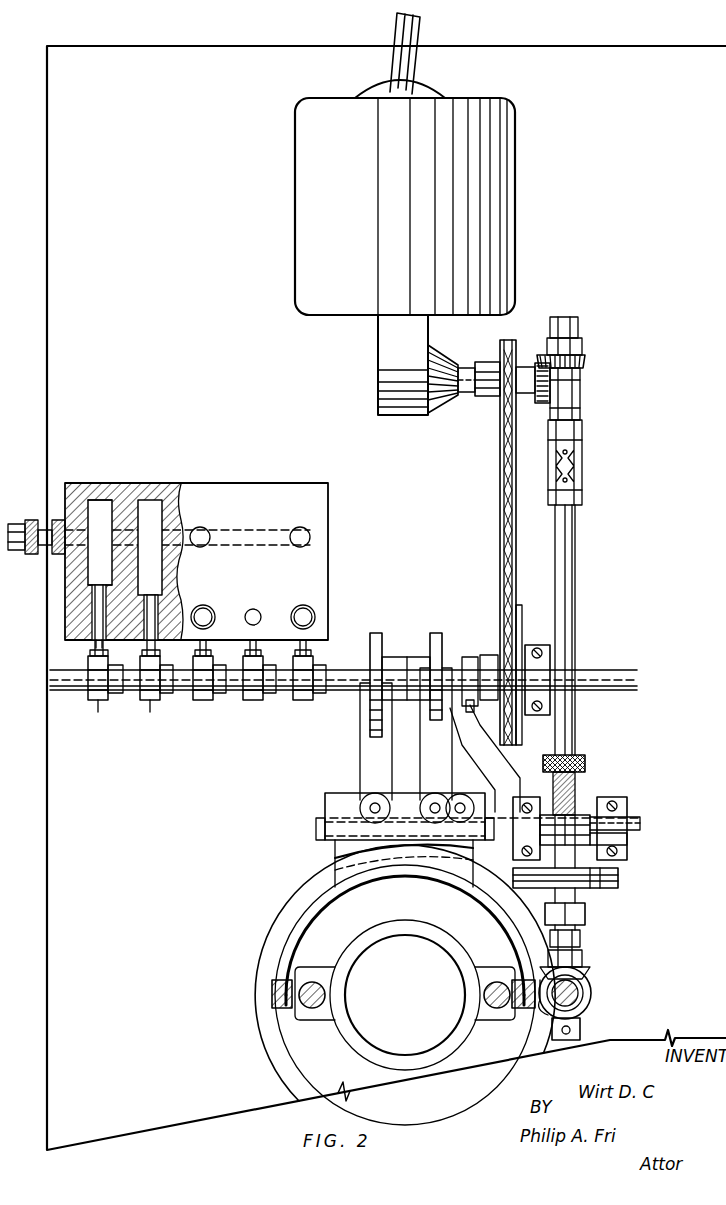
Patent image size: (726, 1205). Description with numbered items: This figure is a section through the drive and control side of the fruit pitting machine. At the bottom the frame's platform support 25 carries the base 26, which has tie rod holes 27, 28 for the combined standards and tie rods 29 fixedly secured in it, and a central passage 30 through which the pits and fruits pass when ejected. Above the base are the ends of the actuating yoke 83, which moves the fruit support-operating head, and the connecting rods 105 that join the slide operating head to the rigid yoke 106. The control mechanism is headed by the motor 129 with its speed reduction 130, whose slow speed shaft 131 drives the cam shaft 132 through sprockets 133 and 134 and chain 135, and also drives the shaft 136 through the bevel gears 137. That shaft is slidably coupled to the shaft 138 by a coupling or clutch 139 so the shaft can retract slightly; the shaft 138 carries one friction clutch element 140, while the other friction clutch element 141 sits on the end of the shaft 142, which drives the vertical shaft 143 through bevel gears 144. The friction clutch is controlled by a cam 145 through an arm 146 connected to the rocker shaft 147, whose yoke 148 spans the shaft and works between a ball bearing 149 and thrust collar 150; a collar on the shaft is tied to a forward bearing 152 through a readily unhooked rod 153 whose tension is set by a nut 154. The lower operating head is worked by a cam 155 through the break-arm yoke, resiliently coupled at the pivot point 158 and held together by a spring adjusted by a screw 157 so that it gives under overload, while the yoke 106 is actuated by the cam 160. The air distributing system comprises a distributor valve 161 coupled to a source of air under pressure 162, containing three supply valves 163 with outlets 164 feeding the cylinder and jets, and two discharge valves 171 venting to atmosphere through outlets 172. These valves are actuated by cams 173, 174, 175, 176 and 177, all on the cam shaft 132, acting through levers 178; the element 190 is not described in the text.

The platform support 25 is at (190, 1107).
The base 26 is at (276, 924).
The tie rod hole 27 is at (320, 1001).
The tie rod hole 28 is at (490, 1000).
The combined standards and tie rods 29 is at (312, 1009).
The central passage 30 is at (418, 984).
The actuating yoke 83 is at (430, 745).
The connecting rods 105 is at (584, 1031).
The yoke 106 is at (287, 958).
The motor 129 is at (504, 218).
The speed reduction 130 is at (393, 355).
The slow speed shaft 131 is at (470, 397).
The cam shaft 132 is at (610, 680).
The sprocket 133 is at (500, 407).
The sprocket 134 is at (502, 607).
The chain 135 is at (500, 522).
The shaft 136 is at (580, 390).
The bevel gears 137 is at (582, 366).
The shaft 138 is at (576, 548).
The coupling or clutch 139 is at (580, 463).
The friction clutch element 140 is at (619, 874).
The friction clutch element 141 is at (619, 885).
The shaft 142 is at (543, 913).
The vertical shaft 143 is at (580, 991).
The bevel gears 144 is at (590, 970).
The cam 145 is at (469, 656).
The arm 146 is at (490, 776).
The rocker shaft 147 is at (628, 808).
The yoke 148 is at (636, 820).
The ball bearing 149 is at (628, 842).
The thrust collar 150 is at (578, 812).
The forward bearing 152 is at (582, 939).
The rod 153 is at (548, 903).
The nut 154 is at (572, 754).
The cam 155 is at (435, 636).
The screw 157 is at (458, 820).
The pivot point 158 is at (318, 831).
The cam 160 is at (378, 632).
The distributor valve 161 is at (253, 498).
The source of air under pressure 162 is at (32, 520).
The supply valves 163 is at (101, 555).
The outlets 164 is at (209, 601).
The discharge valves 171 is at (148, 547).
The outlets 172 is at (254, 612).
The cam 173 is at (98, 702).
The cam 174 is at (150, 704).
The cam 175 is at (203, 702).
The cam 176 is at (253, 704).
The cam 177 is at (303, 704).
The levers 178 is at (93, 650).
The threaded portion 190 is at (578, 772).